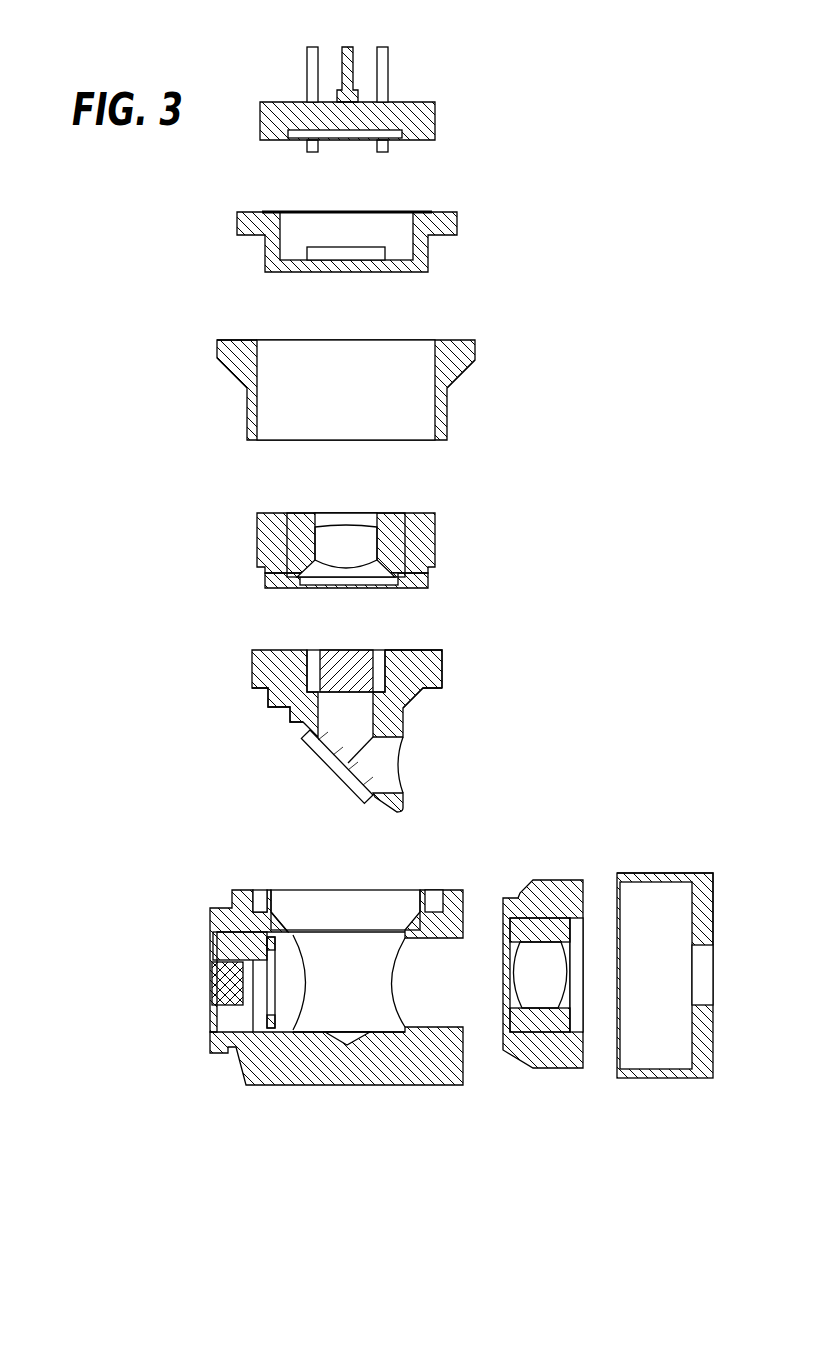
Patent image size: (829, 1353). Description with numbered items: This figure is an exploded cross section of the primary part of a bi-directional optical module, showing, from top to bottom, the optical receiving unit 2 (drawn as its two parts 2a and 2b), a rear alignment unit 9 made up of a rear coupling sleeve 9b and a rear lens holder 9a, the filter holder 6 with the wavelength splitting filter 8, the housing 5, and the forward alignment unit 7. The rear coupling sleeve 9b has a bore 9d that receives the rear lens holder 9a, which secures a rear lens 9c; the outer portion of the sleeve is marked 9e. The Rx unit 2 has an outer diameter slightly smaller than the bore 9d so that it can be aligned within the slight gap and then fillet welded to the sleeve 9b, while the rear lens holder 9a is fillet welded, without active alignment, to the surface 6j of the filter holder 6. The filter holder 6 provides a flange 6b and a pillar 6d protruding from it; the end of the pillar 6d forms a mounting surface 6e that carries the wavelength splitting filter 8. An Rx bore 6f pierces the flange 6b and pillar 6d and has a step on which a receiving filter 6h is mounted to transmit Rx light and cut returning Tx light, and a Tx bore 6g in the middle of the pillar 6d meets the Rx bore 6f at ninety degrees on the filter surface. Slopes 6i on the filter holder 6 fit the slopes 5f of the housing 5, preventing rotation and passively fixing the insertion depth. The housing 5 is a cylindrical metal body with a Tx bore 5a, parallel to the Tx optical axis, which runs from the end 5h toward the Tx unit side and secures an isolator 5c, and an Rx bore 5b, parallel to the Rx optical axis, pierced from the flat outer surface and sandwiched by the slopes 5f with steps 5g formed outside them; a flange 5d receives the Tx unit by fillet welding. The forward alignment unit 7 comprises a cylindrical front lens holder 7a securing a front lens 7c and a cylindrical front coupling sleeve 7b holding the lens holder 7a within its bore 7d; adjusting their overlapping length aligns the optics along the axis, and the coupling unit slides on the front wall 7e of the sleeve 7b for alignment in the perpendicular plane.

The optical receiving unit 2 is at (377, 157).
The light receiving element package with lead pins 2a is at (420, 102).
The cap of light receiving element unit 2b is at (433, 212).
The lens holder unit 9 is at (377, 425).
The rear lens holder 9a is at (418, 521).
The rear coupling sleeve 9b is at (457, 373).
The collimating lens 9c is at (345, 530).
The bore 9d is at (397, 356).
The upper flange surface of holder 9e is at (226, 340).
The filter holder 6 is at (352, 706).
The flange 6b is at (440, 666).
The pillar 6d is at (405, 730).
The mounting surface 6e is at (387, 806).
The Rx bore 6f is at (310, 668).
The Tx bore 6g is at (380, 768).
The receiving filter 6h is at (348, 662).
The slope 6i is at (268, 705).
The surface 6j is at (262, 652).
The wavelength splitting filter 8 is at (328, 762).
The housing 5 is at (323, 978).
The Tx bore 5a is at (285, 1005).
The Rx bore 5b is at (352, 918).
The isolator 5c is at (212, 983).
The flange 5d is at (222, 906).
The slopes 5f is at (284, 918).
The steps 5g is at (259, 893).
The end 5h is at (460, 1082).
The forward alignment unit 7 is at (630, 1016).
The front lens holder 7a is at (553, 880).
The front coupling sleeve 7b is at (685, 875).
The front lens 7c is at (540, 1005).
The bore 7d is at (635, 902).
The front wall 7e is at (720, 880).